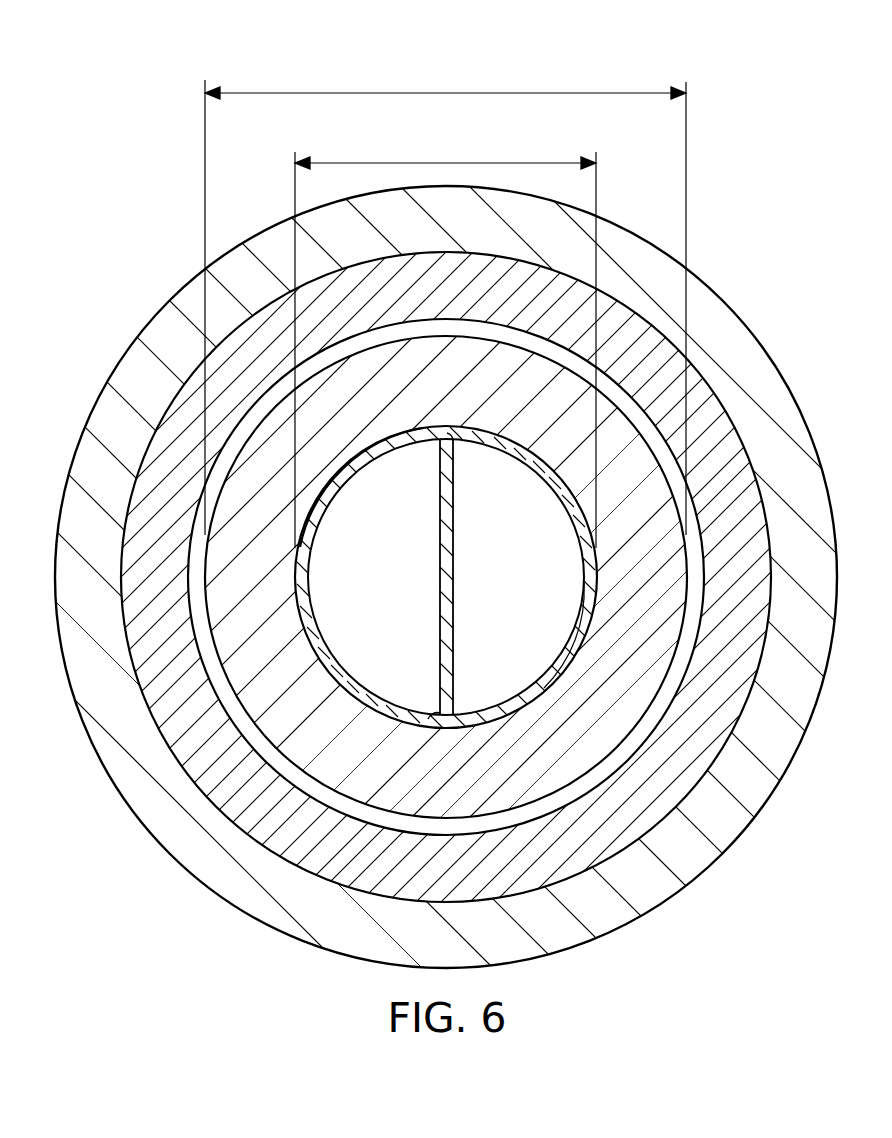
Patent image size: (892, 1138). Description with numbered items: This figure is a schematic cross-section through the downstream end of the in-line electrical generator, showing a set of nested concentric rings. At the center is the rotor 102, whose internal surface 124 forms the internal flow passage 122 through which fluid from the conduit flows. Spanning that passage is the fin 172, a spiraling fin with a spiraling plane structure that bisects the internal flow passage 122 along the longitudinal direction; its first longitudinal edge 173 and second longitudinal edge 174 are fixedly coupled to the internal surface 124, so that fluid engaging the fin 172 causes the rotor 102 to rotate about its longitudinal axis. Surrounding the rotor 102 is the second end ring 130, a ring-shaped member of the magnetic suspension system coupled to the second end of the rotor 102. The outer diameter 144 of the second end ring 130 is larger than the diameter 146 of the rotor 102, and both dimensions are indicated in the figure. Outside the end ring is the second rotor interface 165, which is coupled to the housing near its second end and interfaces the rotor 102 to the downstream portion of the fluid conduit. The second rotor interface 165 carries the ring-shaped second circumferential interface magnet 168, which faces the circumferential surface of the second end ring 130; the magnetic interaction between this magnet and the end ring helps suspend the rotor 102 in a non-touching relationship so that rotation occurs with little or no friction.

The rotor 102 is at (317, 515).
The internal flow passage 122 is at (533, 557).
The internal surface 124 is at (417, 447).
The second end ring 130 is at (585, 655).
The outer diameter 144 is at (365, 92).
The diameter 146 is at (445, 162).
The second rotor interface 165 is at (255, 905).
The second circumferential interface magnet 168 is at (607, 848).
The fin 172 is at (455, 655).
The first longitudinal edge 173 is at (430, 708).
The second longitudinal edge 174 is at (462, 445).